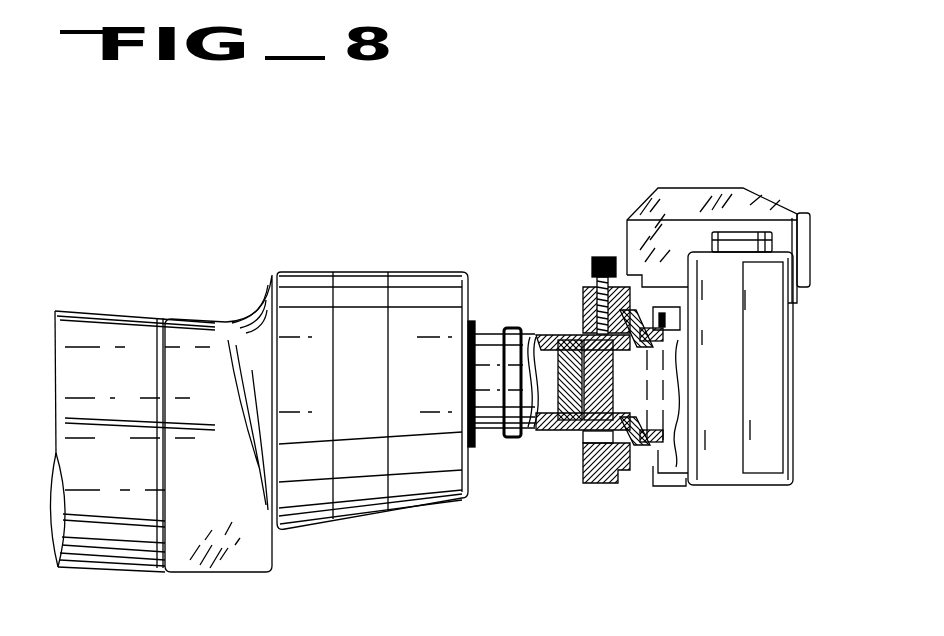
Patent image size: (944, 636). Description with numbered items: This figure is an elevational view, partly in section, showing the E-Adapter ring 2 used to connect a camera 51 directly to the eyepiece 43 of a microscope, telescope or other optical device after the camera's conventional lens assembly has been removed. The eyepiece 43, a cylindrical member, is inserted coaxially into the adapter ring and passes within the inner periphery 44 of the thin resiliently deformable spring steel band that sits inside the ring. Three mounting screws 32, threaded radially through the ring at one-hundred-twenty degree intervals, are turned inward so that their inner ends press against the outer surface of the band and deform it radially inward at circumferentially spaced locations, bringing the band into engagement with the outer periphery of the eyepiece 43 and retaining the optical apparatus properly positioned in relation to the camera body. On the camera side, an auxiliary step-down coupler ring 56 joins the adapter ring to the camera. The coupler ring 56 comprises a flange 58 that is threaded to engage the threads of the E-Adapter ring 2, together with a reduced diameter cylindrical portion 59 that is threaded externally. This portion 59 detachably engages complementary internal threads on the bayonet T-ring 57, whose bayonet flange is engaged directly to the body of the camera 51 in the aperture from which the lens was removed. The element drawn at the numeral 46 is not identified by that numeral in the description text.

The E-Adapter ring 2 is at (621, 394).
The mounting screws 32 is at (596, 277).
The eyepiece 43 is at (558, 333).
The inner periphery of the resilient deformable band 44 is at (590, 442).
The washer 46 is at (549, 395).
The camera 51 is at (688, 177).
The coupler ring 56 is at (645, 312).
The bayonet T-ring 57 is at (668, 318).
The flange 58 is at (637, 452).
The reduced diameter cylindrical portion 59 is at (655, 445).